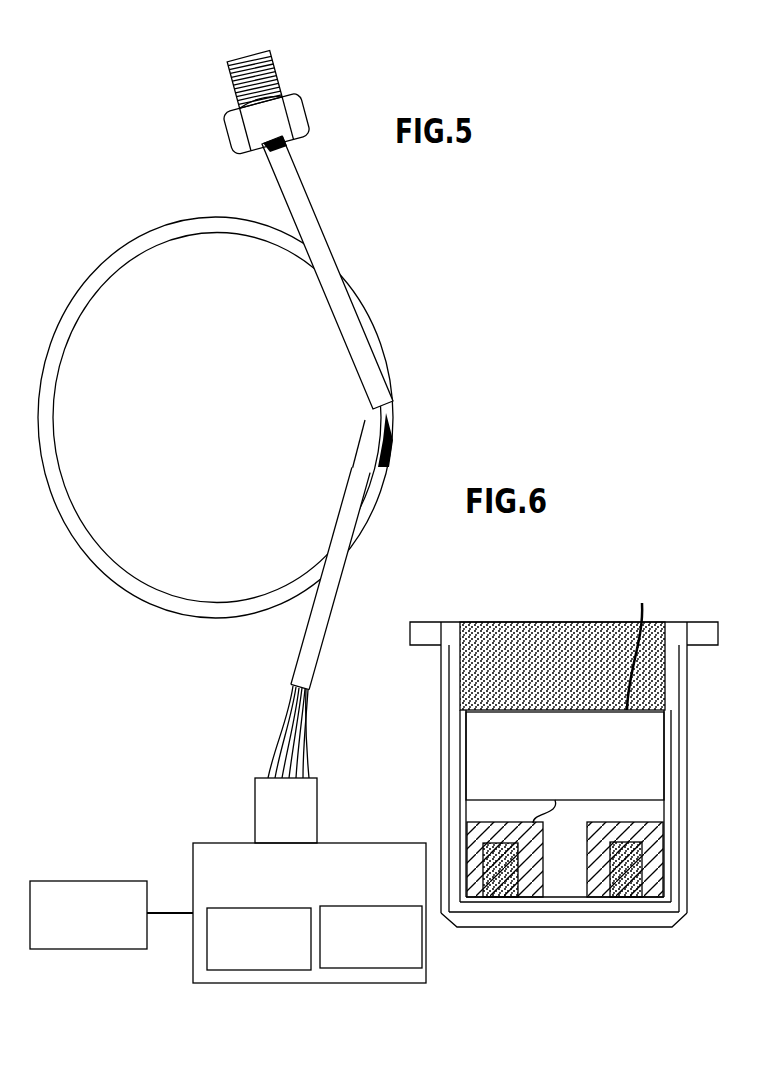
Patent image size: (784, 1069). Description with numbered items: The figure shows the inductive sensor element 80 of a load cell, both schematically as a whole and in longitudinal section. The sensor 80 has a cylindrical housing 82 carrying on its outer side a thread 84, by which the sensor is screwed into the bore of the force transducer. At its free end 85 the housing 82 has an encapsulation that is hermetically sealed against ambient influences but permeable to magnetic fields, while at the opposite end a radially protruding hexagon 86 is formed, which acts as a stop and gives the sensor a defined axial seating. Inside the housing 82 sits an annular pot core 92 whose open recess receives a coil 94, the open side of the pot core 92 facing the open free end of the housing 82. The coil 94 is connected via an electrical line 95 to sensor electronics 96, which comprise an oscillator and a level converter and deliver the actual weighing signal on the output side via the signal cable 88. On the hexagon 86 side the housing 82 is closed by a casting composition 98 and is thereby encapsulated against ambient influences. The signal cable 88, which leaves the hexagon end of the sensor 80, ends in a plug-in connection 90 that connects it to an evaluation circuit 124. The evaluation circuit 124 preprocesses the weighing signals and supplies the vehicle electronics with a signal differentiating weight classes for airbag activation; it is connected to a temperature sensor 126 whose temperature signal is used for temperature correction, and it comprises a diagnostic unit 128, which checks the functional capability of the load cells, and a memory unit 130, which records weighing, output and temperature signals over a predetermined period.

In FIG. 5, the sensor element 80 is at (241, 94).
In FIG. 6, the sensor element 80 is at (561, 751).
In FIG. 5, the housing 82 is at (241, 94).
In FIG. 6, the housing 82 is at (551, 773).
In FIG. 5, the thread 84 is at (240, 76).
In FIG. 6, the thread 84 is at (440, 680).
In FIG. 5, the free end 85 is at (233, 68).
In FIG. 6, the free end 85 is at (538, 942).
In FIG. 5, the hexagon 86 is at (238, 133).
In FIG. 6, the hexagon 86 is at (697, 630).
In FIG. 5, the signal cable 88 is at (320, 213).
In FIG. 6, the signal cable 88 is at (642, 603).
In FIG. 5, the plug-in connection 90 is at (300, 815).
In FIG. 6, the annular pot core 92 is at (603, 852).
In FIG. 6, the coil 94 is at (637, 875).
In FIG. 6, the electrical line 95 is at (537, 800).
In FIG. 6, the sensor electronics 96 is at (652, 742).
In FIG. 6, the casting composition 98 is at (517, 622).
In FIG. 5, the evaluation circuit 124 is at (309, 910).
In FIG. 5, the temperature sensor 126 is at (113, 881).
In FIG. 5, the diagnostic unit 128 is at (263, 972).
In FIG. 5, the memory unit 130 is at (374, 970).